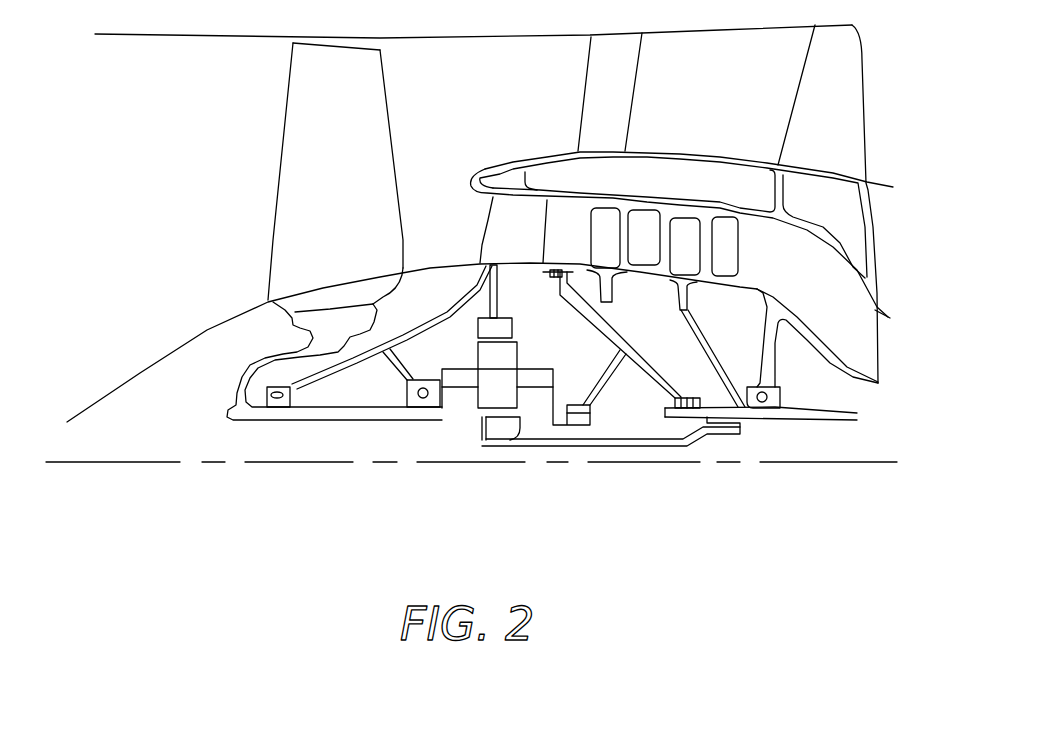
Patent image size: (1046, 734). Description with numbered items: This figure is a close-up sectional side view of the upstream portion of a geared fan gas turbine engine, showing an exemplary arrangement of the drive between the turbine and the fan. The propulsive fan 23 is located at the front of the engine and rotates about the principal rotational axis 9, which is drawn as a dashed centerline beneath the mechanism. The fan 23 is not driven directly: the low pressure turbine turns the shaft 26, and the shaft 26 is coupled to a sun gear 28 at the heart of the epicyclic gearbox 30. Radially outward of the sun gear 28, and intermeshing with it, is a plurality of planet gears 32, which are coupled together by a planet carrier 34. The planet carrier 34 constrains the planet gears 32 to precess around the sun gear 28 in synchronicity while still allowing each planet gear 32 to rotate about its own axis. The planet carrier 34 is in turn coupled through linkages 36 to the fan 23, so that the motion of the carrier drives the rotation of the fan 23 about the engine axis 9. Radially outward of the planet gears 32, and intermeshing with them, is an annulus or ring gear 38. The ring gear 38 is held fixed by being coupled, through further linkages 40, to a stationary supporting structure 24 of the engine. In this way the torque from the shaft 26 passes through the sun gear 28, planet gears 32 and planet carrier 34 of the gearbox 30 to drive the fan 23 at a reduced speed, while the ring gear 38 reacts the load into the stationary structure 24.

The principal rotational axis 9 is at (158, 463).
The propulsive fan 23 is at (293, 152).
The stationary supporting structure 24 is at (502, 229).
The shaft 26 is at (627, 442).
The sun gear 28 is at (502, 430).
The epicyclic gearbox 30 is at (465, 413).
The planet gears 32 is at (488, 395).
The planet carrier 34 is at (553, 400).
The linkages 36 is at (445, 403).
The ring gear 38 is at (507, 327).
The linkages 40 is at (503, 295).